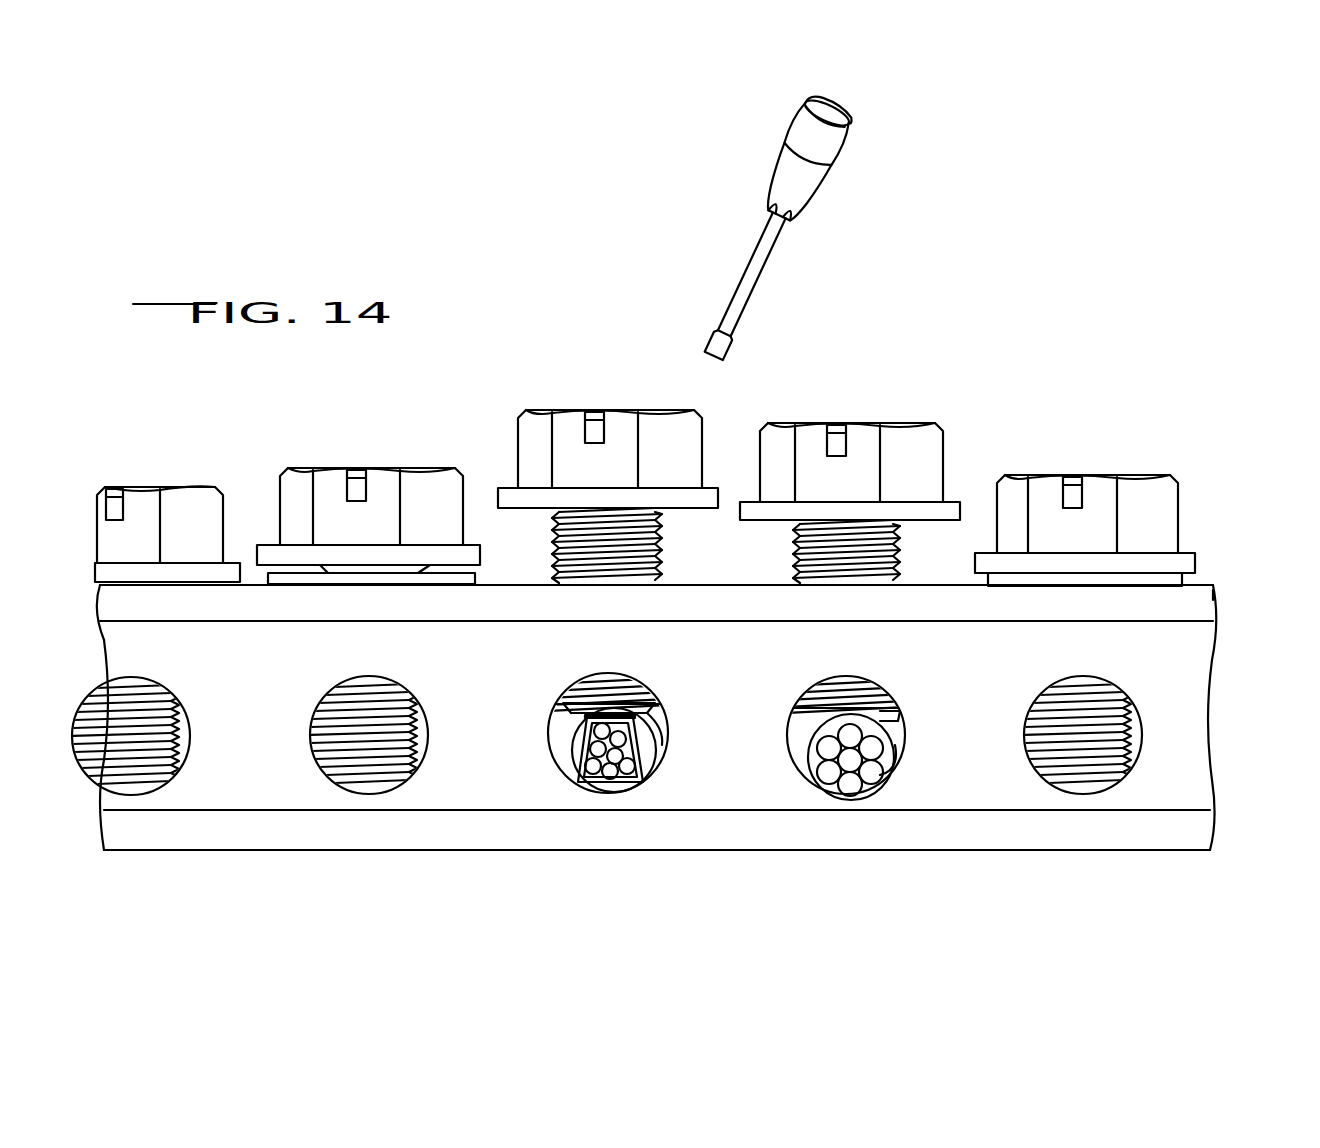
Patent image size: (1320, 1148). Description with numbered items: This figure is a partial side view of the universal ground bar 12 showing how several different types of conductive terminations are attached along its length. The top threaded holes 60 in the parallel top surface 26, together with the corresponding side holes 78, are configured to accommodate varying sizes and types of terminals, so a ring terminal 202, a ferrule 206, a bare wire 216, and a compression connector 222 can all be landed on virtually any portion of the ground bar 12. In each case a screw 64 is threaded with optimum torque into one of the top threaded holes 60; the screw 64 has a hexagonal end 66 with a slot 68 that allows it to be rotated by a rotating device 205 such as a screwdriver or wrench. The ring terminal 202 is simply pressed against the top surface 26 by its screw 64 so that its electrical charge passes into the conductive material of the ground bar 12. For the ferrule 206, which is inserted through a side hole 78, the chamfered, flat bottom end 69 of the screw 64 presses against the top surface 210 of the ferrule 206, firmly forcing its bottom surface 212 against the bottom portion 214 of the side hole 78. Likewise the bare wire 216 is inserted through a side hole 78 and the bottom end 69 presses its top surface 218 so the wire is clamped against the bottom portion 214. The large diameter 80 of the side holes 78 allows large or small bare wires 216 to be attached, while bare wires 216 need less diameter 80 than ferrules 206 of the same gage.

The ground bar 12 is at (1226, 640).
The top surface 26 is at (492, 583).
The top threaded holes 60 is at (186, 580).
The screw 64 is at (140, 503).
The hexagonal end 66 is at (187, 500).
The slot 68 is at (112, 495).
The bottom end 69 is at (660, 732).
The side holes 78 is at (136, 678).
The diameter 80 is at (668, 715).
The ring terminal 202 is at (294, 578).
The rotating device 205 is at (822, 187).
The ferrule 206 is at (580, 758).
The top surface of the ferrule 210 is at (600, 709).
The bottom surface of the ferrule 212 is at (612, 790).
The bottom portion of the side hole 214 is at (576, 783).
The bare wire 216 is at (880, 770).
The top surface of the bare wire 218 is at (812, 740).
The compression connector 222 is at (1040, 580).